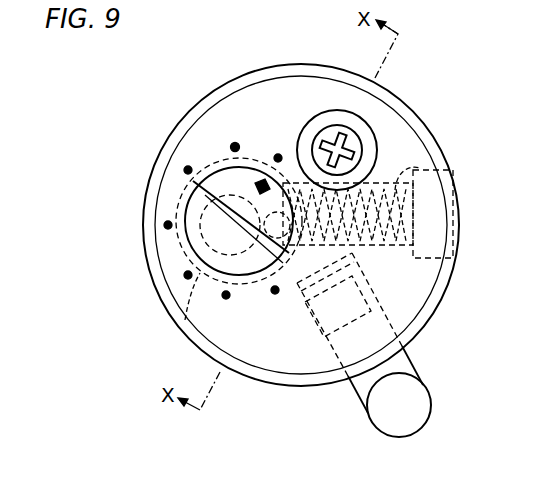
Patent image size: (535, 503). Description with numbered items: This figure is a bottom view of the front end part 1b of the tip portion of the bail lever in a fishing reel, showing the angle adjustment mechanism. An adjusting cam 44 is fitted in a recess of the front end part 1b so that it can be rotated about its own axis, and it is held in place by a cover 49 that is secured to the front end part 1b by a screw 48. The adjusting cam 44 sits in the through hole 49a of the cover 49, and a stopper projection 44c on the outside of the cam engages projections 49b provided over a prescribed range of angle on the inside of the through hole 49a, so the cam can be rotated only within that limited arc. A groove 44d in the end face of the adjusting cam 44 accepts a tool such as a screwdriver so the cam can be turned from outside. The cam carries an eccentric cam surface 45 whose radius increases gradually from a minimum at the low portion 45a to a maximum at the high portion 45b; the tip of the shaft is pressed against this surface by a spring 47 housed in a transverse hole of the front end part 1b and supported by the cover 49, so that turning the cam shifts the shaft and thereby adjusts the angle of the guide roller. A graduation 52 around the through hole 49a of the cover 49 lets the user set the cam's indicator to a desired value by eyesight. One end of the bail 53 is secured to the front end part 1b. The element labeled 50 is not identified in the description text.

The front end part 1b is at (458, 234).
The adjusting cam 44 is at (217, 239).
The stopper projection 44c is at (218, 160).
The groove 44d is at (200, 190).
The eccentric cam surface 45 is at (160, 248).
The low portion 45a is at (268, 262).
The high portion 45b is at (185, 320).
The spring 47 is at (413, 207).
The screw 48 is at (357, 145).
The cover 49 is at (412, 281).
The through hole 49a is at (190, 212).
The projections 49b is at (242, 283).
The spring seat 50 is at (418, 166).
The graduation 52 is at (235, 147).
The bail 53 is at (423, 394).